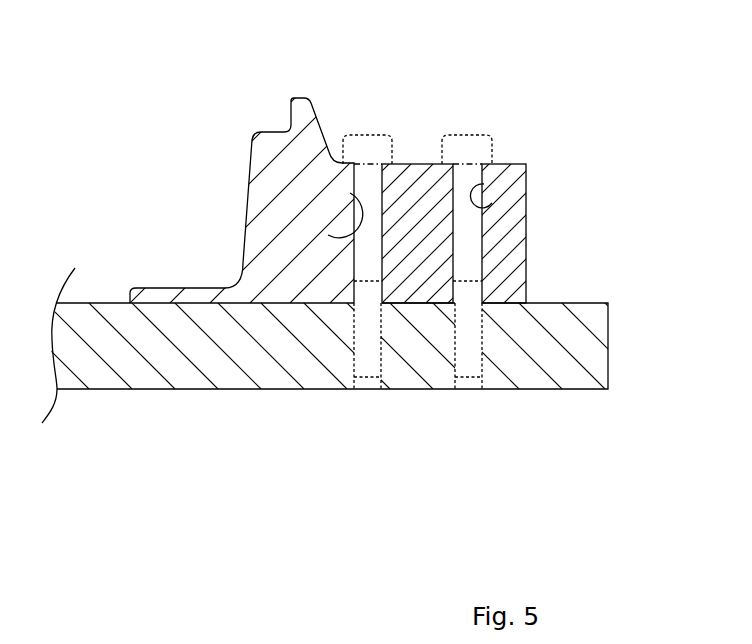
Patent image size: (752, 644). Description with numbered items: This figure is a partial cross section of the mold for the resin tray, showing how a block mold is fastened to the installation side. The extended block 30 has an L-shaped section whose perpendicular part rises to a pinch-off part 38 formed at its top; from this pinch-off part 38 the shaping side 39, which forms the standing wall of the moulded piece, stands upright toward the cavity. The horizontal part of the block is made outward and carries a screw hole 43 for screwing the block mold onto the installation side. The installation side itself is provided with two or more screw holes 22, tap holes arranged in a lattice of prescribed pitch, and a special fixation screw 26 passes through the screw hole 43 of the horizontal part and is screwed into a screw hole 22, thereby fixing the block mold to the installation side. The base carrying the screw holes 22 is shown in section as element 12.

The base 12 is at (540, 380).
The screw hole 22 is at (362, 354).
The fixation screw 26 is at (373, 150).
The extended block 30 is at (516, 228).
The pinch-off part 38 is at (297, 100).
The shaping side 39 is at (253, 157).
The screw hole 43 is at (328, 235).